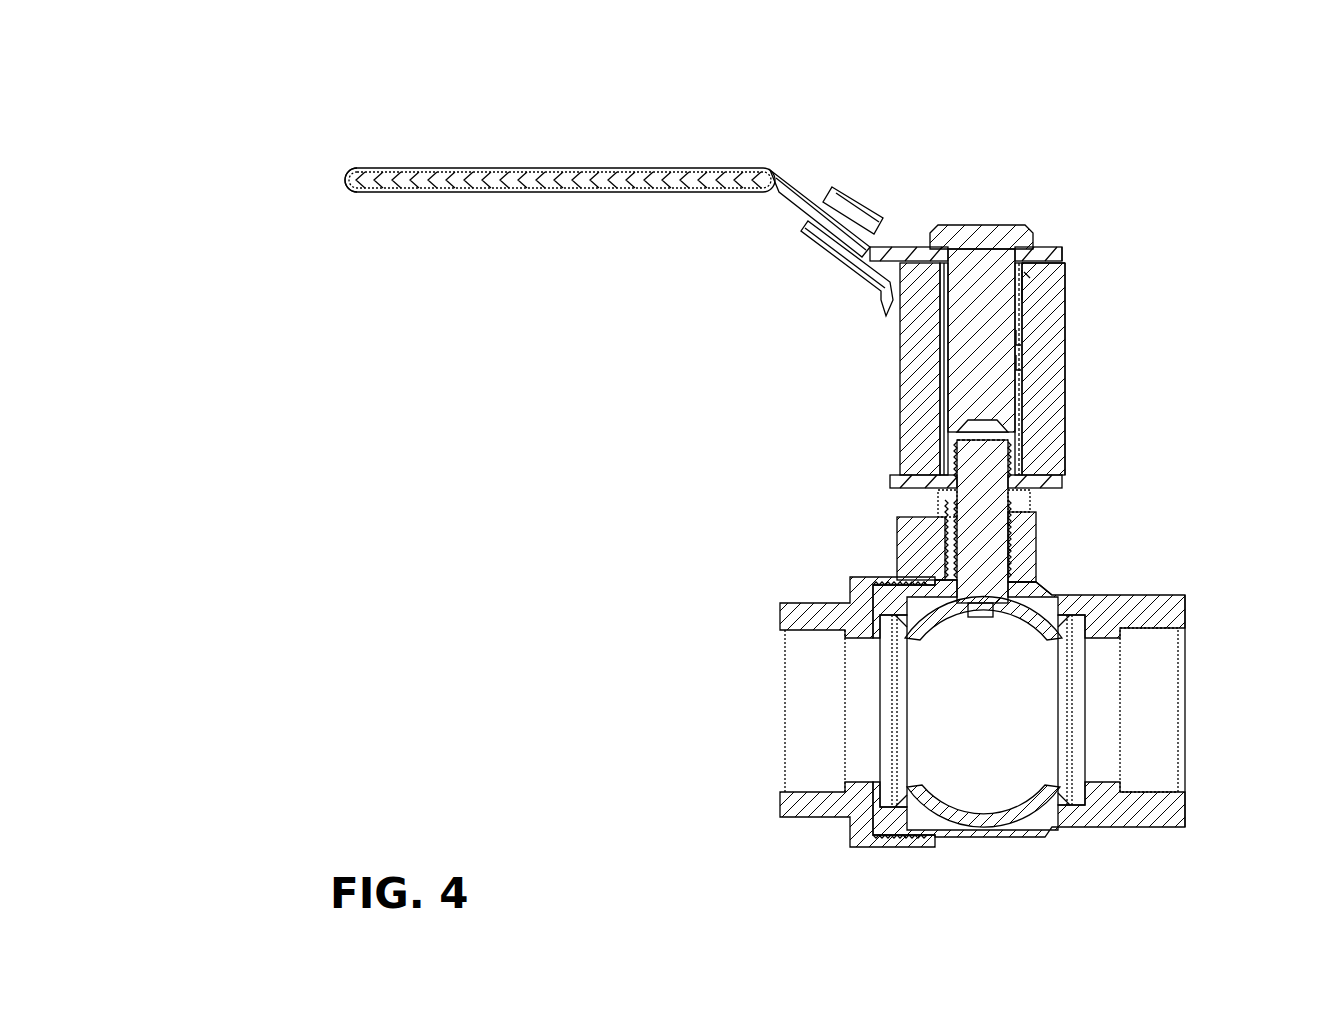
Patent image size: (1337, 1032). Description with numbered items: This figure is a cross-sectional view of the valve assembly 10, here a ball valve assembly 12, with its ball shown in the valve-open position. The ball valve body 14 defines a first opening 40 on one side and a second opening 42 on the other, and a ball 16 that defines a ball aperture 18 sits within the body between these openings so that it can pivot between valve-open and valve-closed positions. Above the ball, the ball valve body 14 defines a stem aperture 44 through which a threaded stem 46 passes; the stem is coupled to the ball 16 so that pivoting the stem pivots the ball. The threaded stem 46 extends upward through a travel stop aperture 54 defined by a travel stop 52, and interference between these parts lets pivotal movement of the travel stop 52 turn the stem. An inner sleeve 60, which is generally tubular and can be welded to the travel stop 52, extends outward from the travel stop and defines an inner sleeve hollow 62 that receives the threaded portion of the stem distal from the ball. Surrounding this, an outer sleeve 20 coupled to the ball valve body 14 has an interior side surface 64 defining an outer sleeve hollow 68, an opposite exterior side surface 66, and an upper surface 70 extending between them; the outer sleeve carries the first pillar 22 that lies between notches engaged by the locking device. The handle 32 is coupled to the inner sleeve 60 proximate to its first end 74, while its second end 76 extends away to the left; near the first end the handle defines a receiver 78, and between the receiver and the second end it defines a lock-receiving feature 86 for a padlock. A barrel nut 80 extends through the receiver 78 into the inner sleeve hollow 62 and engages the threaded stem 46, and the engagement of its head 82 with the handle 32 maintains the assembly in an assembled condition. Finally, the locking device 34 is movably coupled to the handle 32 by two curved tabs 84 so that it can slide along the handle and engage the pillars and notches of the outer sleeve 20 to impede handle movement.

The valve assembly 10 is at (1069, 128).
The ball valve assembly 12 is at (1115, 113).
The ball valve body 14 is at (1160, 591).
The ball 16 is at (1042, 618).
The ball aperture 18 is at (1077, 693).
The outer sleeve 20 is at (1063, 366).
The first pillar 22 is at (912, 348).
The handle 32 is at (575, 163).
The locking device 34 is at (835, 262).
The first opening 40 is at (778, 732).
The second opening 42 is at (1187, 738).
The stem aperture 44 is at (999, 547).
The threaded stem 46 is at (1005, 500).
The travel stop 52 is at (886, 473).
The travel stop aperture 54 is at (967, 459).
The inner sleeve 60 is at (1022, 315).
The inner sleeve hollow 62 is at (1033, 287).
The interior side surface 64 is at (1024, 334).
The exterior side surface 66 is at (1067, 403).
The outer sleeve hollow 68 is at (940, 397).
The upper surface 70 is at (1058, 247).
The first end 74 is at (1047, 247).
The second end 76 is at (345, 178).
The receiver 78 is at (1011, 242).
The barrel nut 80 is at (931, 223).
The head 82 is at (965, 233).
The curved tabs 84 is at (848, 190).
The lock-receiving feature 86 is at (795, 185).